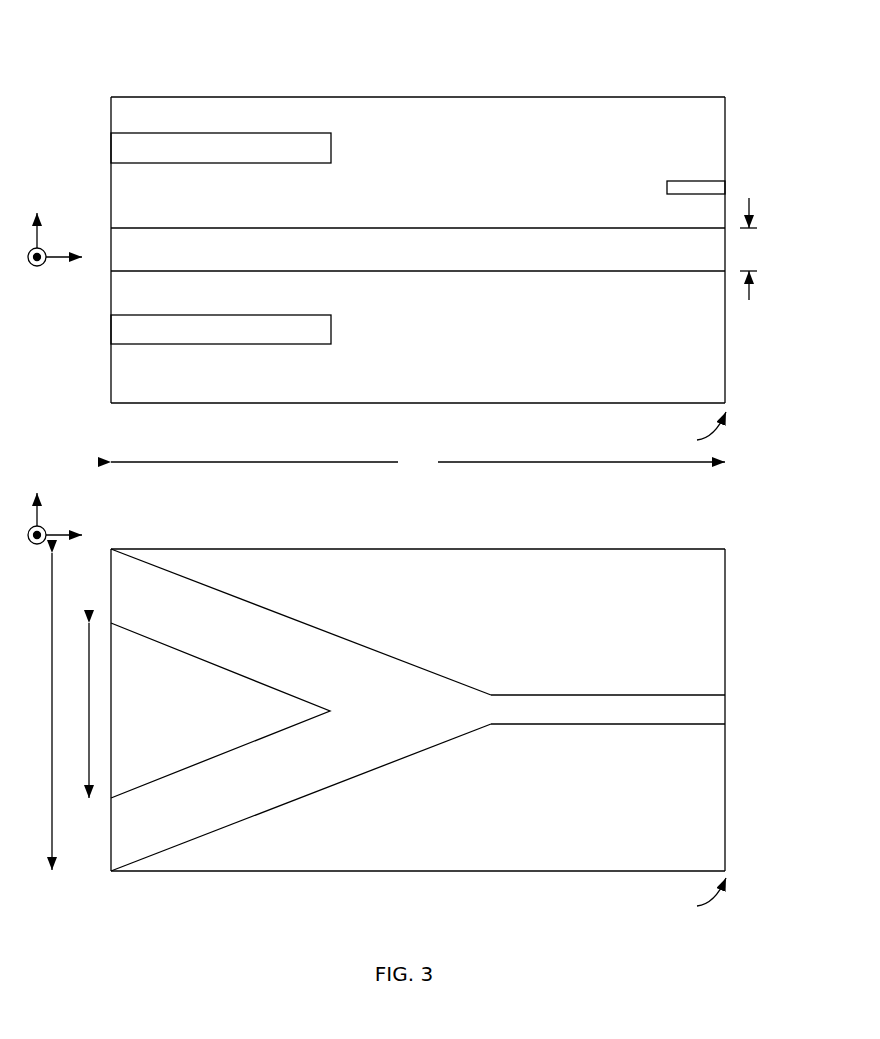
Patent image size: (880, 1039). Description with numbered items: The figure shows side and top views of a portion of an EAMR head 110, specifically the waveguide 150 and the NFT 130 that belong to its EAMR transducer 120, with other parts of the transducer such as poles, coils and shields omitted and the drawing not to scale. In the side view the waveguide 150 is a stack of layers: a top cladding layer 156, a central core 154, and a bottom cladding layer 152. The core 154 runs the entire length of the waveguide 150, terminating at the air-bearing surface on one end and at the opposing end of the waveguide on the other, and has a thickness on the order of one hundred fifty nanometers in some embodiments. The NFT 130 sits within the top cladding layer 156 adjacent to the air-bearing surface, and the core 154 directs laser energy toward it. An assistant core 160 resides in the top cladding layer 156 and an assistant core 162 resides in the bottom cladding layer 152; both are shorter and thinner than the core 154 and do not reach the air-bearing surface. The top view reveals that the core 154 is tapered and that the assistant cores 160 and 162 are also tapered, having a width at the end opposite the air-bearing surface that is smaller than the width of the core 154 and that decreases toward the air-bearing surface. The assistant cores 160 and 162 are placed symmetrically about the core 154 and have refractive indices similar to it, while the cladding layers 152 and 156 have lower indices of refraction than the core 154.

The EAMR head 110 is at (385, 48).
The EAMR transducer 120 is at (183, 80).
The NFT 130 is at (726, 188).
The waveguide 150 is at (184, 540).
The cladding layer 152 is at (287, 403).
The core 154 is at (111, 240).
The cladding layer 156 is at (726, 123).
The assistant core 160 is at (111, 146).
The assistant core 162 is at (111, 330).